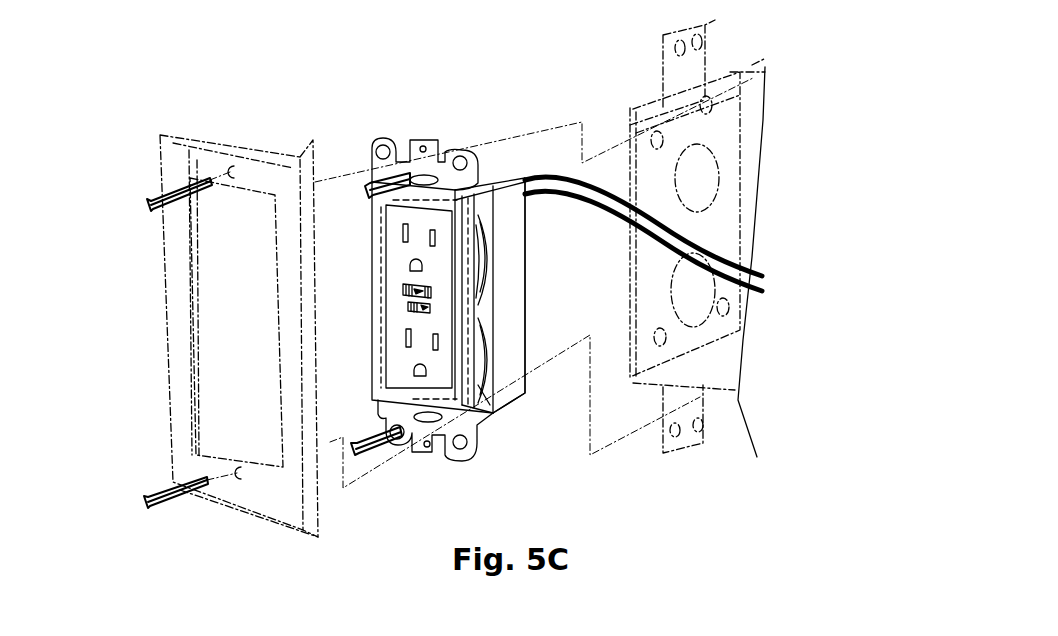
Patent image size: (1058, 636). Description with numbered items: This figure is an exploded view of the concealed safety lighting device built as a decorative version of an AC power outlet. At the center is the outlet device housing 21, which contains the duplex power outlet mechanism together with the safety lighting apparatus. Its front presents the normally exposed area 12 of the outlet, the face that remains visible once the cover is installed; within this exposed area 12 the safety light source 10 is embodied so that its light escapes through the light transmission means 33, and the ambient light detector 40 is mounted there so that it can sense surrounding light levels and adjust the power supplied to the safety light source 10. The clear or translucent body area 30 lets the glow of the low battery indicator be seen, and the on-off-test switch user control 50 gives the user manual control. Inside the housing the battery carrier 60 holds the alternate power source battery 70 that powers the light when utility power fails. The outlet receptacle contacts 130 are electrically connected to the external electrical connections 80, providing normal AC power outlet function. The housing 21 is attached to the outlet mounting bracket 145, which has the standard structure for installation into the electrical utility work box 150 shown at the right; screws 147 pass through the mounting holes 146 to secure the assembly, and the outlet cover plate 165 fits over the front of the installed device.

The safety light source 10 is at (407, 292).
The normally exposed area of the outlet 12 is at (383, 380).
The outlet device housing 21 is at (512, 363).
The clear or translucent body area 30 is at (420, 303).
The light transmission means 33 is at (405, 287).
The ambient light detector 40 is at (415, 305).
The on-off-test switch user control 50 is at (413, 307).
The battery carrier 60 is at (490, 403).
The alternate power source battery 70 is at (493, 358).
The external electrical connections 80 is at (607, 135).
The outlet receptacle contacts 130 is at (402, 237).
The outlet mounting bracket 145 is at (467, 440).
The mounting holes 146 is at (425, 152).
The screw 147 is at (157, 257).
The electrical utility work box 150 is at (740, 68).
The outlet cover plate 165 is at (193, 172).